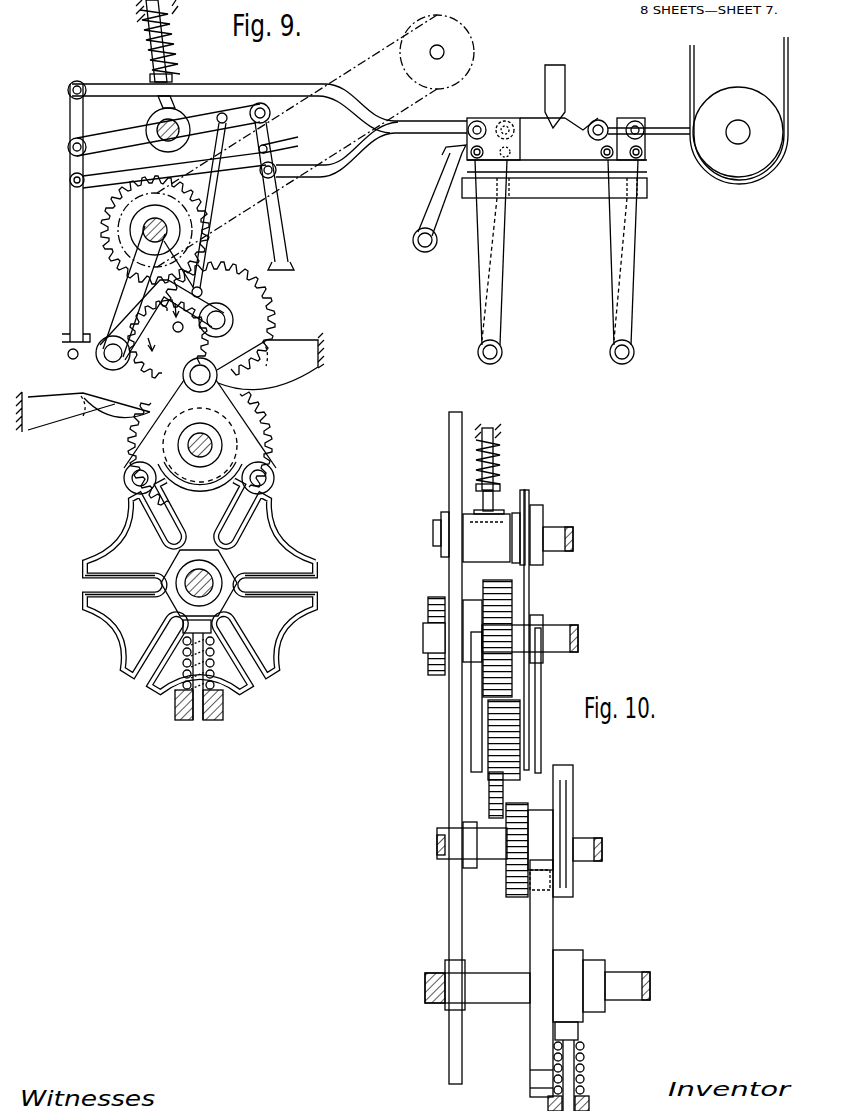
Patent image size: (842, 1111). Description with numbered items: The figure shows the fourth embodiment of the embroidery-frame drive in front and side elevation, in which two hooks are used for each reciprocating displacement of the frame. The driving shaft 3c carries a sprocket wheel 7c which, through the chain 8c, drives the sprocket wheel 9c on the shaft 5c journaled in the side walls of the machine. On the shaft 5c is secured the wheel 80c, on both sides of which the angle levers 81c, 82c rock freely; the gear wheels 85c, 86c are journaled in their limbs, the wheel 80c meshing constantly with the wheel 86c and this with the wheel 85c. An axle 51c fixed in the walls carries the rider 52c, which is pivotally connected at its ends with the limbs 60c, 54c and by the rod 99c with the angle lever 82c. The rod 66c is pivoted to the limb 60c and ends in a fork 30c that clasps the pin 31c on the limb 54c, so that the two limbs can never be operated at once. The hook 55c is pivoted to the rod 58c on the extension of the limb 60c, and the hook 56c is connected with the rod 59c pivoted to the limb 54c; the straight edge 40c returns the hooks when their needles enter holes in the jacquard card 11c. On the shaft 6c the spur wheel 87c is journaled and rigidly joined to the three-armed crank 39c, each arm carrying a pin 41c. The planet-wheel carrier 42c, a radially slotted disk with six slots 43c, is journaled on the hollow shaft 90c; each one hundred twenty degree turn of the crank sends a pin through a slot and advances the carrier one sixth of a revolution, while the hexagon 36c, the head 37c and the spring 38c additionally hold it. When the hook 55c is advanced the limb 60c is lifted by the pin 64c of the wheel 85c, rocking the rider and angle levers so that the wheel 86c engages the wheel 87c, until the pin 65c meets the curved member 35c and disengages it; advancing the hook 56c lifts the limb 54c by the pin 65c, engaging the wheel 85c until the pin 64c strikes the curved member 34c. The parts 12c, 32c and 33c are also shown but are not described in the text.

In FIG. 9, the driving shaft 3c is at (444, 52).
In FIG. 9, the shaft 5c is at (148, 229).
In FIG. 10, the shaft 5c is at (562, 636).
In FIG. 9, the shaft 6c is at (210, 452).
In FIG. 10, the shaft 6c is at (586, 850).
In FIG. 9, the sprocket wheel 7c is at (466, 45).
In FIG. 9, the chain 8c is at (350, 60).
In FIG. 9, the sprocket wheel 9c is at (123, 212).
In FIG. 10, the sprocket wheel 9c is at (497, 638).
In FIG. 9, the jacquard card 11c is at (696, 70).
In FIG. 9, the pulley 12c is at (738, 132).
In FIG. 9, the fork 30c is at (288, 141).
In FIG. 9, the pin 31c is at (262, 169).
In FIG. 9, the spring rod 32c is at (170, 86).
In FIG. 10, the spring rod 32c is at (492, 505).
In FIG. 9, the hub 33c is at (184, 123).
In FIG. 10, the hub 33c is at (478, 556).
In FIG. 9, the curved member 34c is at (148, 405).
In FIG. 9, the curved member 35c is at (212, 370).
In FIG. 9, the hexagon 36c is at (224, 568).
In FIG. 10, the hexagon 36c is at (537, 986).
In FIG. 9, the head 37c is at (214, 624).
In FIG. 10, the head 37c is at (579, 1034).
In FIG. 9, the spring 38c is at (222, 692).
In FIG. 10, the spring 38c is at (584, 1080).
In FIG. 9, the three-armed crank 39c is at (218, 398).
In FIG. 10, the three-armed crank 39c is at (568, 808).
In FIG. 9, the straight edge 40c is at (440, 178).
In FIG. 9, the pin 41c is at (137, 470).
In FIG. 9, the planet-wheel carrier 42c is at (278, 530).
In FIG. 10, the planet-wheel carrier 42c is at (548, 950).
In FIG. 9, the slots 43c is at (133, 582).
In FIG. 9, the axle 51c is at (150, 125).
In FIG. 9, the rider 52c is at (243, 111).
In FIG. 10, the rider 52c is at (516, 536).
In FIG. 9, the limb 54c is at (283, 232).
In FIG. 9, the hook 55c is at (478, 117).
In FIG. 9, the hook 56c is at (628, 117).
In FIG. 9, the rod 58c is at (392, 108).
In FIG. 9, the rod 59c is at (360, 158).
In FIG. 9, the limb 60c is at (72, 277).
In FIG. 10, the limb 60c is at (529, 600).
In FIG. 9, the pin 64c is at (68, 354).
In FIG. 9, the pin 65c is at (184, 332).
In FIG. 9, the rod 66c is at (118, 174).
In FIG. 9, the wheel 80c is at (157, 298).
In FIG. 10, the wheel 80c is at (476, 702).
In FIG. 10, the angle lever 81c is at (472, 686).
In FIG. 9, the angle lever 82c is at (193, 288).
In FIG. 10, the angle lever 82c is at (539, 694).
In FIG. 9, the gear wheel 85c is at (70, 393).
In FIG. 10, the gear wheel 85c is at (490, 806).
In FIG. 9, the gear wheel 86c is at (272, 322).
In FIG. 9, the wheel 87c is at (238, 412).
In FIG. 10, the wheel 87c is at (507, 874).
In FIG. 9, the bushing or hollow shaft 90c is at (180, 593).
In FIG. 9, the rod 99c is at (211, 190).